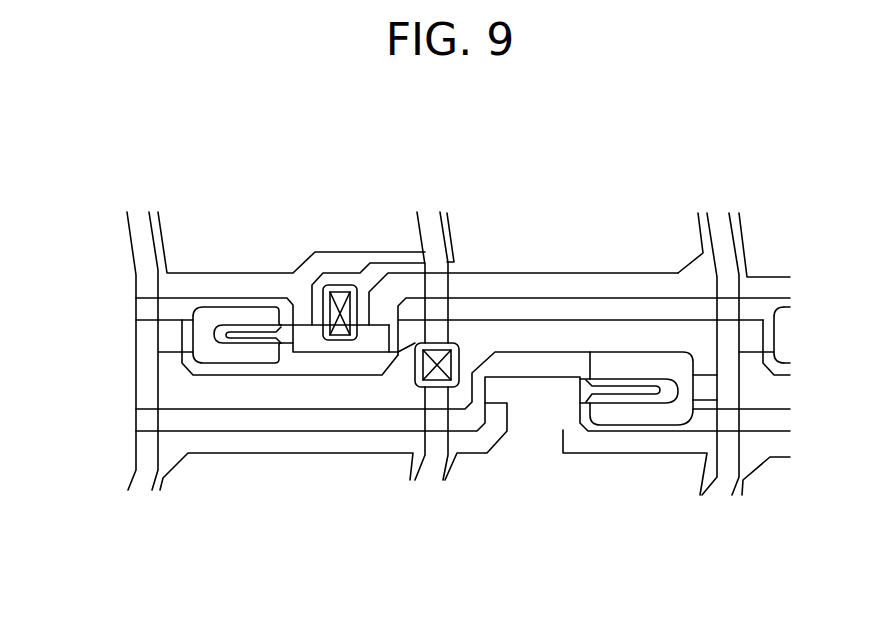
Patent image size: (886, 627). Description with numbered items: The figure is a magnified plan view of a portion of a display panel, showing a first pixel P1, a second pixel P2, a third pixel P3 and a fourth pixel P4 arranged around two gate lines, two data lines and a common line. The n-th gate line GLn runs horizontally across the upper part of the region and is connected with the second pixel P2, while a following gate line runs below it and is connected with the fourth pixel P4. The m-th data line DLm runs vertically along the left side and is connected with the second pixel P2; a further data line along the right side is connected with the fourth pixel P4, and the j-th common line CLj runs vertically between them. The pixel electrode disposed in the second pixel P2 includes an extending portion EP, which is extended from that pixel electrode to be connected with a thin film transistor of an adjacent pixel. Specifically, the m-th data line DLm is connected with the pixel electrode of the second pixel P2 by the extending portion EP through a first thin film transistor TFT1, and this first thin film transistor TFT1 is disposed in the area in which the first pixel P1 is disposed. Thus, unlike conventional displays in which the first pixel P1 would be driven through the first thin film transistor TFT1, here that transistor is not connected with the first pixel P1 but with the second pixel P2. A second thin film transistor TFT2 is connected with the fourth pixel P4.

The extending portion EP is at (398, 268).
The first pixel P1 is at (291, 242).
The second pixel P2 is at (575, 243).
The third pixel P3 is at (286, 471).
The fourth pixel P4 is at (576, 449).
The n-th gate line GLn is at (143, 307).
The m-th data line DLm is at (140, 477).
The j-th common line CLj is at (430, 478).
The first thin film transistor TFT1 is at (240, 367).
The second thin film transistor TFT2 is at (640, 427).